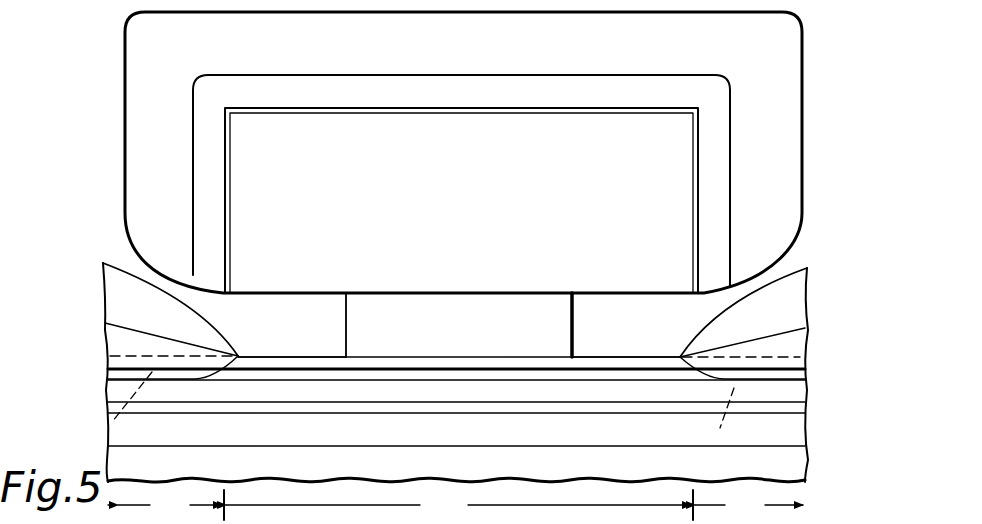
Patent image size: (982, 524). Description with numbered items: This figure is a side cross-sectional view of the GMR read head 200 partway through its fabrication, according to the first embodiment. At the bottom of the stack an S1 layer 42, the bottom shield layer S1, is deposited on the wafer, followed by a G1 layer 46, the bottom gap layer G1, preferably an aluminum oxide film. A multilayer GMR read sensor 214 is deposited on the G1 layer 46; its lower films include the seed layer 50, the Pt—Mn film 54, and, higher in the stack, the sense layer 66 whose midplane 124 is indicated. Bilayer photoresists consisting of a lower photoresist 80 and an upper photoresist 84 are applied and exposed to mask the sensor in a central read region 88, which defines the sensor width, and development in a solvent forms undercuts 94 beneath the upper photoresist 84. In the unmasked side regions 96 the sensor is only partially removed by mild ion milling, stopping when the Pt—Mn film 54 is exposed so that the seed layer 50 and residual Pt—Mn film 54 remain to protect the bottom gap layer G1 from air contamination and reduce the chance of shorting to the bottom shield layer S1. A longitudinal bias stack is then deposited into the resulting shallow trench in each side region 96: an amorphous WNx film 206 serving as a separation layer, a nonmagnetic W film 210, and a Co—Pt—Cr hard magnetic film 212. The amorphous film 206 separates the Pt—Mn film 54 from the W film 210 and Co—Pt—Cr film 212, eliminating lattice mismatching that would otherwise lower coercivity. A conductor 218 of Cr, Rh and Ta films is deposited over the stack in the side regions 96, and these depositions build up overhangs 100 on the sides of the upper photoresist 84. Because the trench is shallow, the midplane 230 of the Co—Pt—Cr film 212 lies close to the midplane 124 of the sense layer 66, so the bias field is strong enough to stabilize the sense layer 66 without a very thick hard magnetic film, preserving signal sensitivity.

The S1 layer 42 is at (525, 478).
The G1 layer 46 is at (450, 430).
The seed layer 50 is at (348, 408).
The Pt—Mn film 54 is at (528, 393).
The sense layer 66 is at (515, 368).
The lower photoresist 80 is at (452, 328).
The upper photoresist 84 is at (457, 201).
The read region 88 is at (458, 505).
The undercuts 94 is at (336, 328).
The side regions 96 is at (455, 505).
The overhangs 100 is at (180, 200).
The midplane of the sense layer 124 is at (114, 418).
The GMR read head 200 is at (126, 251).
The amorphous WNx film 206 is at (107, 376).
The W film 210 is at (107, 375).
The Co—Pt—Cr hard magnetic film 212 is at (118, 333).
The GMR read sensor 214 is at (318, 348).
The conductor 218 is at (116, 286).
The midplane of the Co—Pt—Cr film 230 is at (172, 354).
The bottom gap layer G1 is at (688, 435).
The bottom shield layer S1 is at (808, 463).